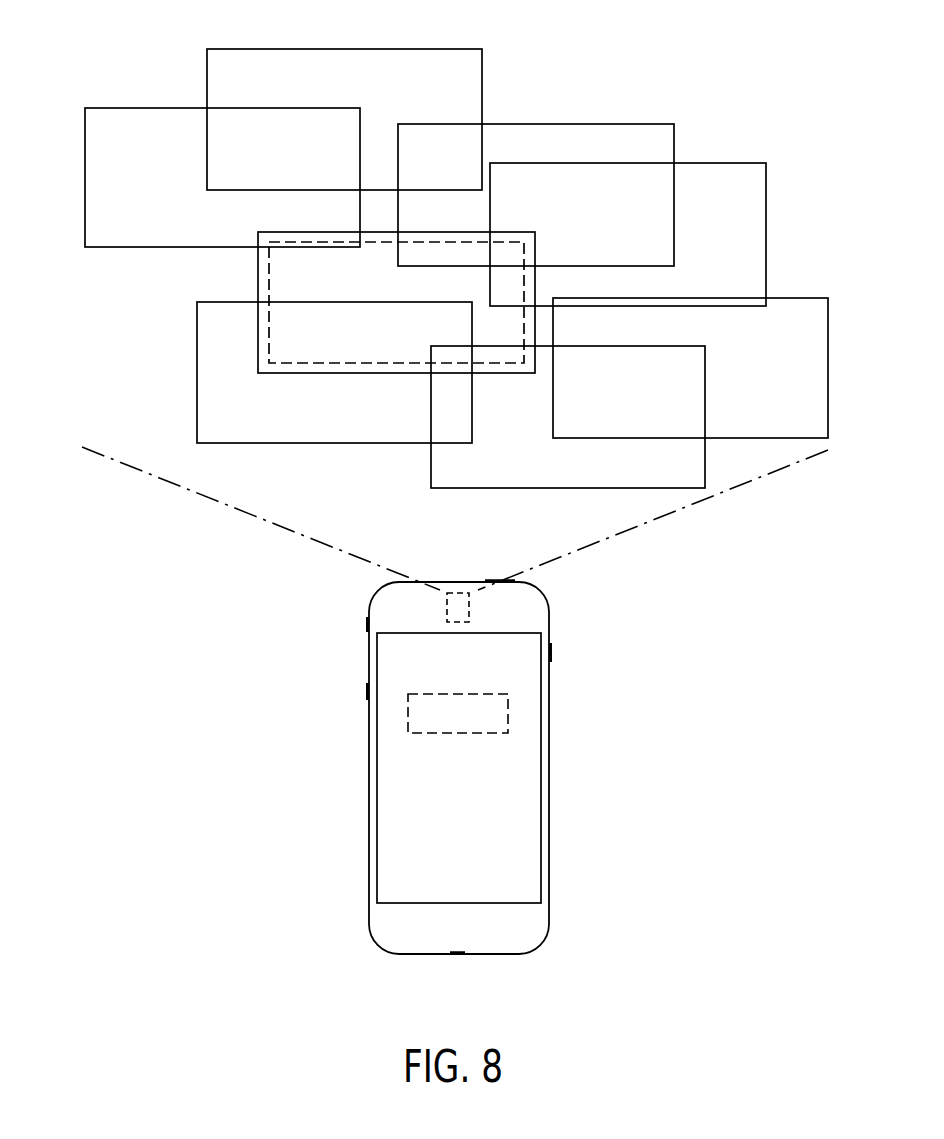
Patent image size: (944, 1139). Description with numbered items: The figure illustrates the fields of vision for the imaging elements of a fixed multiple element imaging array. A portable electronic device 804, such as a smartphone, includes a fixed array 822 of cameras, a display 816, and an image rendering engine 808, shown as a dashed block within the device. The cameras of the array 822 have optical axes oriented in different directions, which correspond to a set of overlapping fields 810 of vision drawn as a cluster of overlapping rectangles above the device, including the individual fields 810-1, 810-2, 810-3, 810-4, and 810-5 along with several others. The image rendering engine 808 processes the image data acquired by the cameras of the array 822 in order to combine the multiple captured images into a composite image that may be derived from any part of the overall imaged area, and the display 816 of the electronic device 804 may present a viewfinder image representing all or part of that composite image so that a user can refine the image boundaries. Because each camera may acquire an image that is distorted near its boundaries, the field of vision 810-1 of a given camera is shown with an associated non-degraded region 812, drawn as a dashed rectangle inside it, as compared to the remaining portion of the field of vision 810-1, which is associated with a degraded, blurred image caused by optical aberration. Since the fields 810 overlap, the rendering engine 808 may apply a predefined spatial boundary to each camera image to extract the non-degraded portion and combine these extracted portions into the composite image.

The portable electronic device 804 is at (481, 767).
The image rendering engine 808 is at (458, 693).
The overlapping fields of vision 810 is at (142, 108).
The field of vision 810-1 is at (258, 297).
The second image frame 810-2 is at (106, 248).
The third image frame 810-3 is at (674, 141).
The fourth image frame 810-4 is at (569, 489).
The fifth image frame 810-5 is at (306, 445).
The non-degraded region 812 is at (268, 327).
The display 816 is at (397, 853).
The fixed array of cameras 822 is at (458, 613).